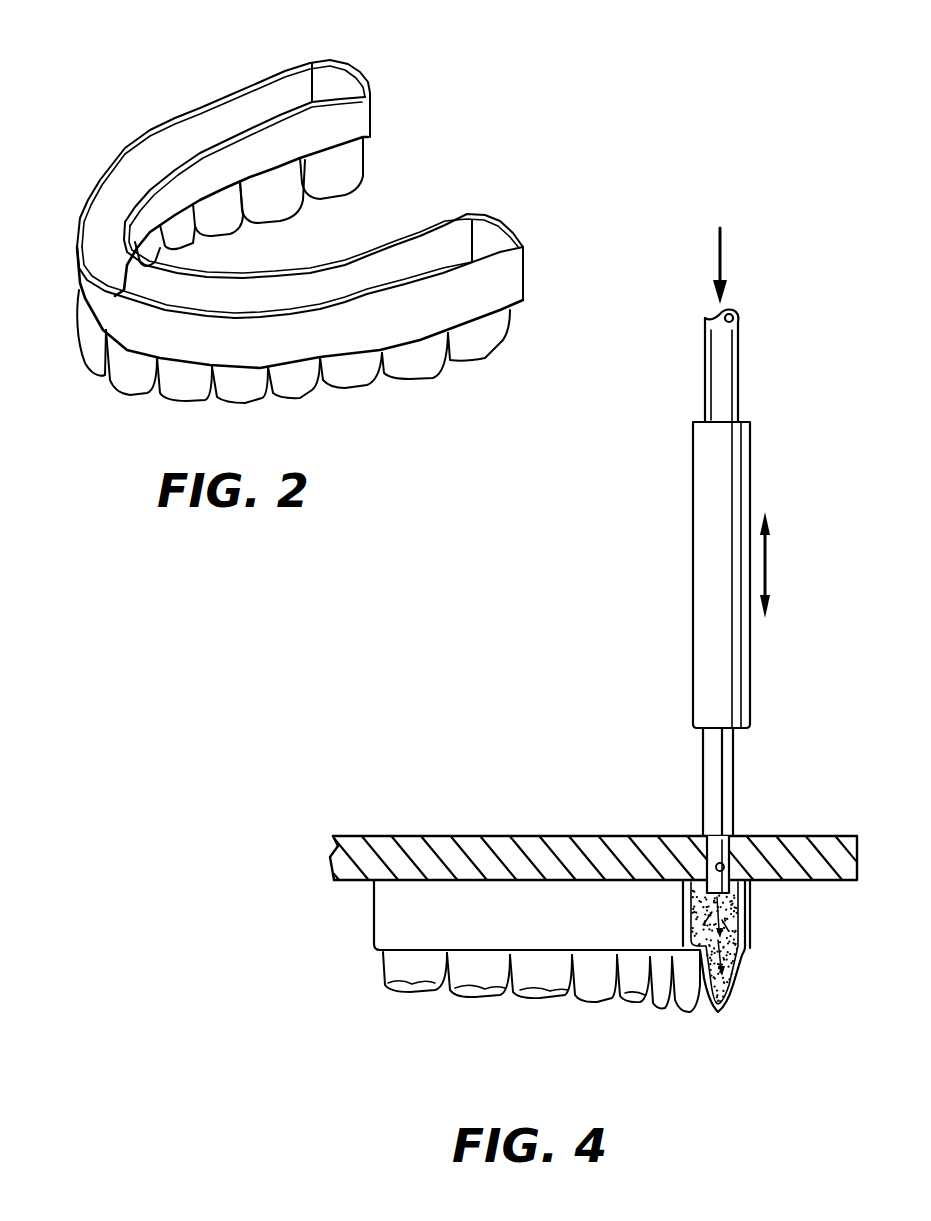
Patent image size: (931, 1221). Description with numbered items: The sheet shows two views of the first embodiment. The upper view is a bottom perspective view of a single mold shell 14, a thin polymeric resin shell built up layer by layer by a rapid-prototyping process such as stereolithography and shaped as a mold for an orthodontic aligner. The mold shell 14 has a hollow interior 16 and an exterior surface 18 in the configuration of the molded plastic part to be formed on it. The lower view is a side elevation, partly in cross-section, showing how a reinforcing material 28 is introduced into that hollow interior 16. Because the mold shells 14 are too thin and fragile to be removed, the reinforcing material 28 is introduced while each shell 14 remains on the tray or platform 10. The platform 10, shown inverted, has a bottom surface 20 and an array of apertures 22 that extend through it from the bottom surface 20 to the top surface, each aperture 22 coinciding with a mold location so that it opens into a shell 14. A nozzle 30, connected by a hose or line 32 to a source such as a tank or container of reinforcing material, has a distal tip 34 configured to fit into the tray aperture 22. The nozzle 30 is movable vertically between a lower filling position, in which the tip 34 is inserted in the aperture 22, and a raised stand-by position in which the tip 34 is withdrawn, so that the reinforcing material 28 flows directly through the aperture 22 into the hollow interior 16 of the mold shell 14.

In FIG. 4, the tray or platform 10 is at (556, 653).
In FIG. 2, the mold shell 14 is at (274, 249).
In FIG. 4, the mold shell 14 is at (502, 948).
In FIG. 2, the hollow interior 16 is at (300, 214).
In FIG. 2, the exterior surface 18 is at (413, 381).
In FIG. 4, the exterior surface 18 is at (483, 993).
In FIG. 4, the bottom surface 20 is at (457, 836).
In FIG. 4, the aperture 22 is at (724, 868).
In FIG. 4, the reinforcing material 28 is at (686, 900).
In FIG. 4, the nozzle 30 is at (750, 698).
In FIG. 4, the hose or line 32 is at (740, 392).
In FIG. 4, the distal tip 34 is at (707, 855).